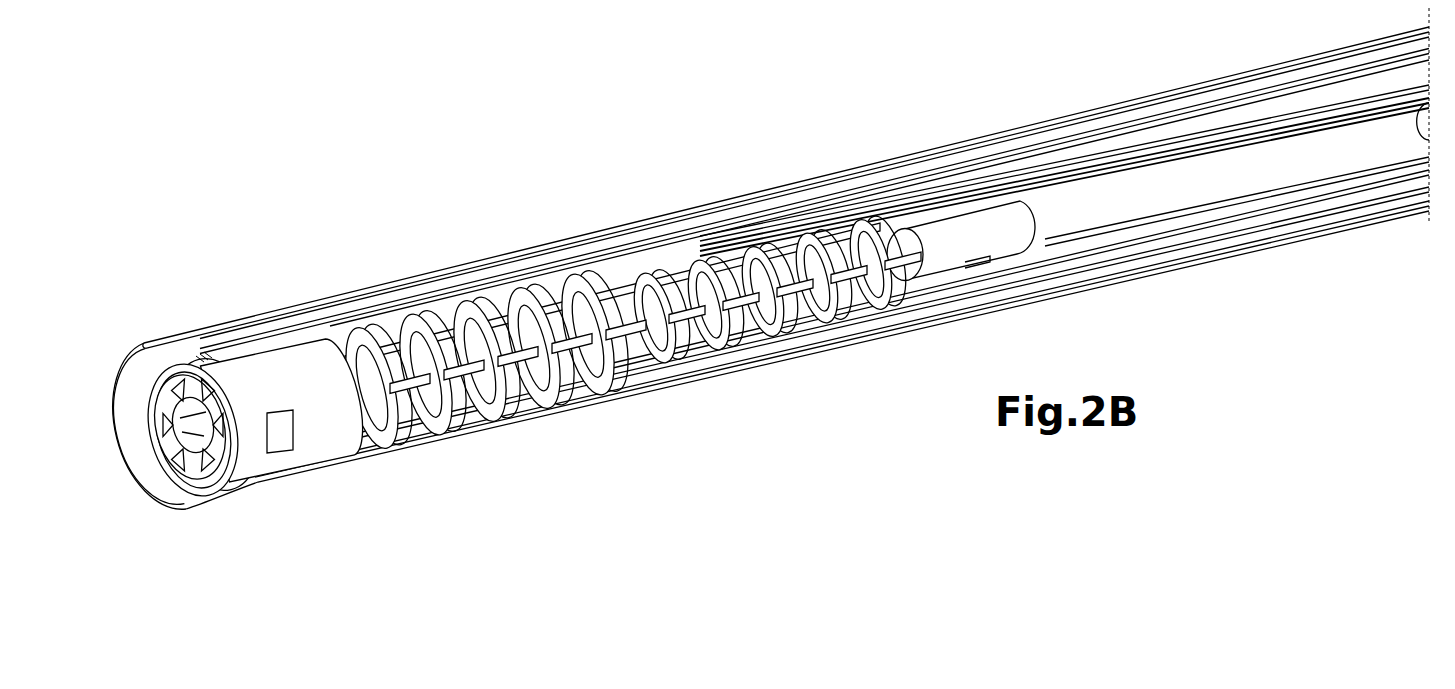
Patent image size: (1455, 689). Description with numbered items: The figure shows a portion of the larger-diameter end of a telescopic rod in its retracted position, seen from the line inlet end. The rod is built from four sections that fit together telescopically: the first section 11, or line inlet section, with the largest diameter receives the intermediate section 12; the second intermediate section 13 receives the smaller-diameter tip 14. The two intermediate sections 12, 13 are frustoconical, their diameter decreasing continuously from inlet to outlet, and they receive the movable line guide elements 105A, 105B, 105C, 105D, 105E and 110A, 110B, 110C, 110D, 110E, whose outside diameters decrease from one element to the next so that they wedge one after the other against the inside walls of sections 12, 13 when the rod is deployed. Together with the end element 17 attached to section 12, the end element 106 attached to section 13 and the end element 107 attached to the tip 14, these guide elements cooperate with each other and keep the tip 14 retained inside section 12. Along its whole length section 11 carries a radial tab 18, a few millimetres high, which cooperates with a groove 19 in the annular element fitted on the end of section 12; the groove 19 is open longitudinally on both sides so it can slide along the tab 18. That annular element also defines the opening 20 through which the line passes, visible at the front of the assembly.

The first section 11 is at (208, 328).
The intermediate section 12 is at (665, 240).
The intermediate section 13 is at (855, 215).
The tip 14 is at (1180, 190).
The end element 17 is at (300, 360).
The tab 18 is at (405, 295).
The groove 19 is at (138, 346).
The opening 20 is at (185, 440).
The movable line guide element 105A is at (375, 400).
The movable line guide element 105B is at (385, 320).
The movable line guide element 105C is at (460, 385).
The movable line guide element 105D is at (490, 315).
The movable line guide element 105E is at (565, 385).
The end element 106 is at (615, 300).
The end element 107 is at (1020, 226).
The movable line guide element 110A is at (680, 315).
The movable line guide element 110B is at (735, 310).
The movable line guide element 110C is at (790, 300).
The movable line guide element 110D is at (830, 265).
The movable line guide element 110E is at (888, 285).